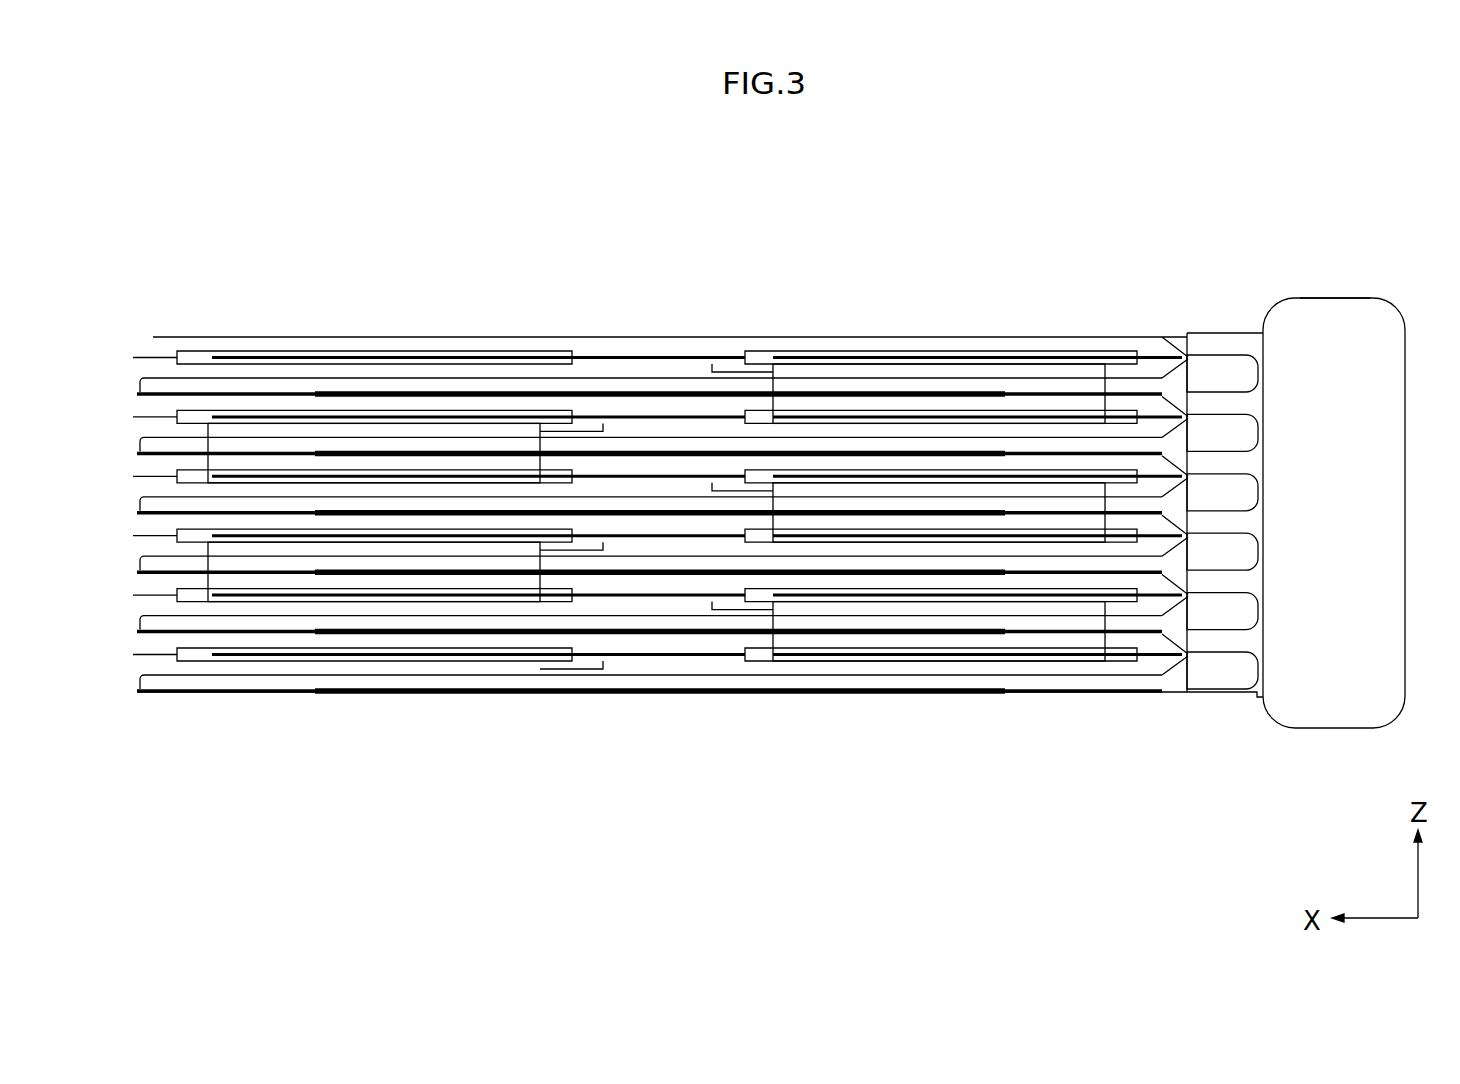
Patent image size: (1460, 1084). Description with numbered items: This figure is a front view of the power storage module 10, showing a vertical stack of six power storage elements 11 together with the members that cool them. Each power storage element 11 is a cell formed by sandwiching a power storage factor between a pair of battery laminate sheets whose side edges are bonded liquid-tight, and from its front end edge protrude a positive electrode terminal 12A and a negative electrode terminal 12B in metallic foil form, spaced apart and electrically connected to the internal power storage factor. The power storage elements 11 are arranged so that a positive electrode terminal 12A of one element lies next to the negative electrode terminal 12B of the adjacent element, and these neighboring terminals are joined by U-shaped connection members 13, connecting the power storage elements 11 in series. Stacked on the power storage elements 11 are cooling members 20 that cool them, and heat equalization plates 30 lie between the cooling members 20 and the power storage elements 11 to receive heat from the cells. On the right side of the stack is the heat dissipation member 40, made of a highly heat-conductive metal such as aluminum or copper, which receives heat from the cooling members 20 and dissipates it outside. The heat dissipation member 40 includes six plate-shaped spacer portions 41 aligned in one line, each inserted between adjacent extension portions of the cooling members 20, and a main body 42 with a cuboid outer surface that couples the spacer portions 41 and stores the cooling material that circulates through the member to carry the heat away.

The power storage module 10 is at (1316, 147).
The power storage element 11 is at (675, 510).
The positive electrode terminal 12A is at (330, 357).
The negative electrode terminal 12B is at (388, 414).
The connection member 13 is at (263, 572).
The cooling member 20 is at (642, 503).
The heat equalization plate 30 is at (686, 512).
The heat dissipation member 40 is at (1370, 272).
The spacer portion 41 is at (1210, 467).
The main body 42 is at (1310, 308).